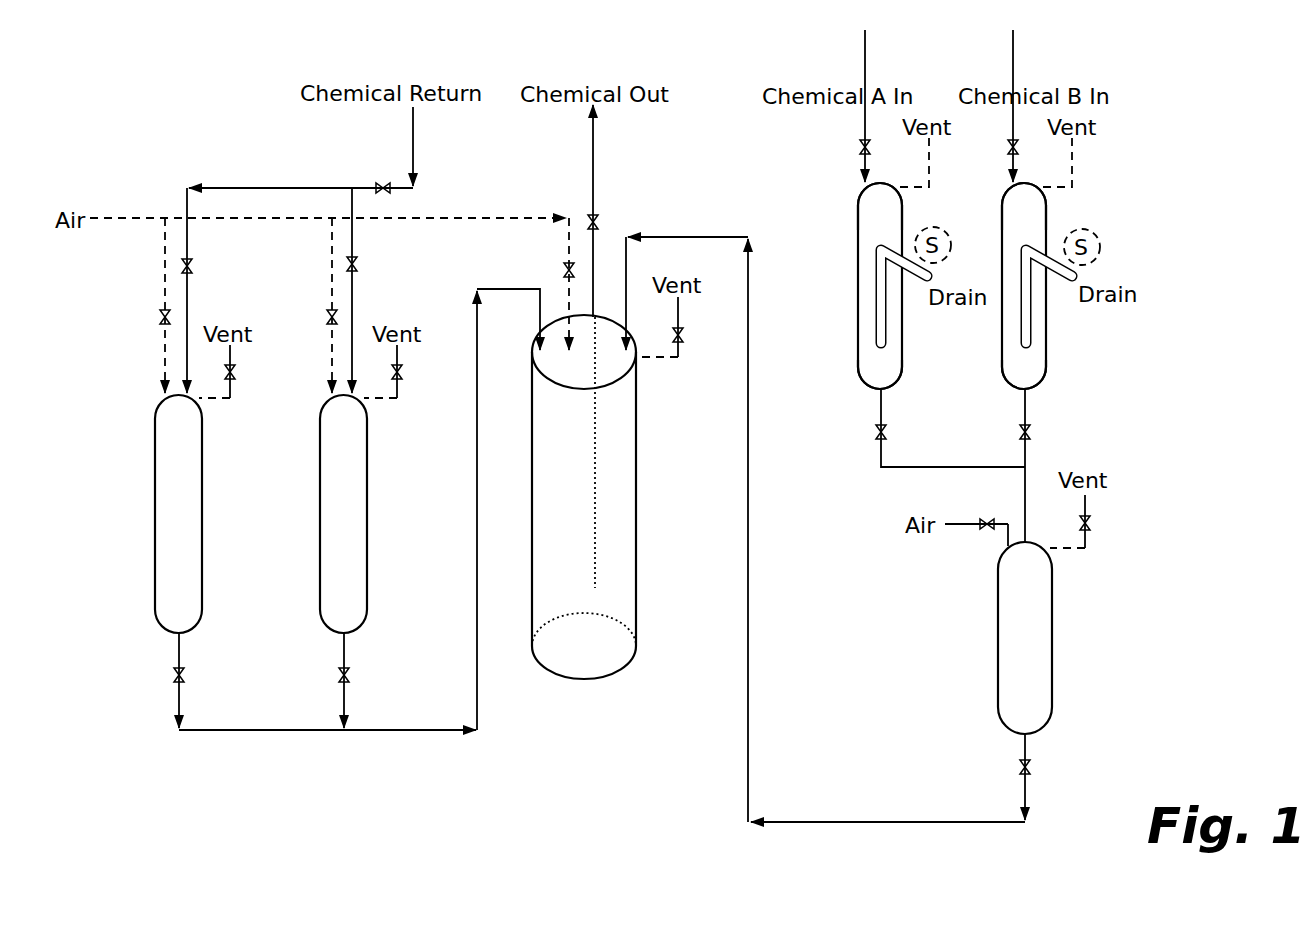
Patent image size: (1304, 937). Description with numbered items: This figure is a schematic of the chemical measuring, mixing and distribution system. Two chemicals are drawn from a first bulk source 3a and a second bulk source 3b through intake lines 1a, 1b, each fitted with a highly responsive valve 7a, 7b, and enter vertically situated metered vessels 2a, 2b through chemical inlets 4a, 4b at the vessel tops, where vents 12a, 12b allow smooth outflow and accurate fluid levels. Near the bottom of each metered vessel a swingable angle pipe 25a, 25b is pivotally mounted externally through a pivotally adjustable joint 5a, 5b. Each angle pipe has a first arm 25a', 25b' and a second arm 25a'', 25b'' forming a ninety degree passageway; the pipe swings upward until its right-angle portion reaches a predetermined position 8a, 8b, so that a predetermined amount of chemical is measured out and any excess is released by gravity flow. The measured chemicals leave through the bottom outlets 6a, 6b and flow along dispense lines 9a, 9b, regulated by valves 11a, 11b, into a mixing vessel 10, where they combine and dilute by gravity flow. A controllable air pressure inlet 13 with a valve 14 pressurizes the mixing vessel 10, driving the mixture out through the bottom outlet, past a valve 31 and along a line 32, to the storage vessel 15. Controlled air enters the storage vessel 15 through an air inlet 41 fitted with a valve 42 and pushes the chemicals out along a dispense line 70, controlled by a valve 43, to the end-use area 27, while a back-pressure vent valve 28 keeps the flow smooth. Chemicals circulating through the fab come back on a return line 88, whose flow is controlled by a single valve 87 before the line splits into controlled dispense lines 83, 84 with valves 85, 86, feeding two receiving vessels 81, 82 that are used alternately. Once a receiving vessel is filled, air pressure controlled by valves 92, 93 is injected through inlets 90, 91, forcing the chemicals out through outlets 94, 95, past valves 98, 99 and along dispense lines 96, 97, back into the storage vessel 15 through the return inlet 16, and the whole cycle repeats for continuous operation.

The intake line 1a is at (847, 132).
The second intake line 1b is at (995, 132).
The first metered vessel 2a is at (862, 286).
The second metered vessel 2b is at (1009, 286).
The first bulk source 3a is at (872, 34).
The second bulk source 3b is at (1020, 34).
The chemical inlet 4a is at (864, 201).
The chemical inlet 4b is at (1010, 201).
The pivotally adjustable joint 5a is at (872, 348).
The pivotally adjustable joint 5b is at (1035, 350).
The vessel 2a outlet 6a is at (862, 410).
The vessel 2b outlet 6b is at (1046, 410).
The valve 7a is at (846, 154).
The valve 7b is at (996, 154).
The predetermined position 8a is at (891, 242).
The predetermined position 8b is at (1037, 242).
The dispense line 9a is at (880, 455).
The dispense line 9b is at (1033, 455).
The mixing vessel 10 is at (1025, 638).
The valve 11a is at (906, 434).
The valve 11b is at (1001, 434).
The vent 12a is at (906, 164).
The vent 12b is at (1050, 164).
The controllable air pressure inlet 13 is at (989, 546).
The valve 14 is at (976, 511).
The storage vessel 15 is at (584, 497).
The return inlet 16 is at (538, 352).
The swingable angle pipe 25a is at (814, 335).
The first arm 25a' is at (814, 304).
The second arm 25a'' is at (941, 326).
The swingable angle pipe 25b is at (1090, 341).
The first arm 25b' is at (1093, 311).
The second arm 25b'' is at (1156, 261).
The end-use area 27 is at (593, 64).
The back-pressure vent valve 28 is at (682, 327).
The mixing vessel outlet valve 31 is at (1046, 777).
The mixed chemical supply pipe 32 is at (825, 529).
The air inlet 41 is at (328, 203).
The valve 42 is at (553, 284).
The valve 43 is at (611, 224).
The dispense line 70 is at (613, 346).
The receiving vessel 81 is at (162, 514).
The receiving vessel 82 is at (327, 514).
The controlled dispense line 83 is at (206, 290).
The controlled dispense line 84 is at (371, 290).
The valve 85 is at (205, 270).
The valve 86 is at (370, 269).
The valve 87 is at (301, 174).
The return line 88 is at (433, 146).
The inlet 90 is at (149, 305).
The inlet 91 is at (315, 305).
The valve 92 is at (148, 320).
The valve 93 is at (315, 320).
The outlet 94 is at (201, 653).
The outlet 95 is at (369, 651).
The dispense line 96 is at (163, 686).
The dispense line 97 is at (326, 684).
The valve 98 is at (200, 679).
The valve 99 is at (366, 679).